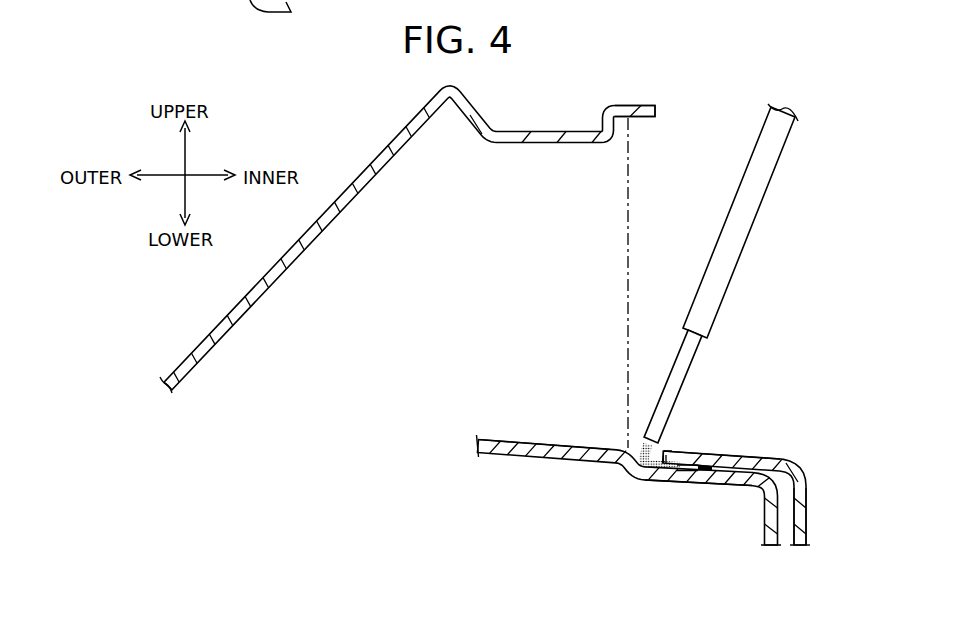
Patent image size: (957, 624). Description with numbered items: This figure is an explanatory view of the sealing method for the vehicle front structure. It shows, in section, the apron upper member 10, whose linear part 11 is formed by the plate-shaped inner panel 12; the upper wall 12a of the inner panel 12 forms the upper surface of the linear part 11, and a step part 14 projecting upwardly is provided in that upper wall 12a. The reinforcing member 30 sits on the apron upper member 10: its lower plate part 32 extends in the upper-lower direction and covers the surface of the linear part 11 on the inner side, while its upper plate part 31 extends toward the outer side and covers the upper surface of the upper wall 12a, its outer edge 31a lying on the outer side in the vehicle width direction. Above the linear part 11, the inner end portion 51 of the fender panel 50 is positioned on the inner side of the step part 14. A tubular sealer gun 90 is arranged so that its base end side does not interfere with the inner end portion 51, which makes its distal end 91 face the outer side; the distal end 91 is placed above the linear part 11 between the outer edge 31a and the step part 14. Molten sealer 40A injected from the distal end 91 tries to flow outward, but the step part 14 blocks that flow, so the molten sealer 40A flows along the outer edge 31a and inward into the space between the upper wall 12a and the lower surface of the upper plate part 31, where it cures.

The apron upper member 10 is at (516, 351).
The linear part 11 is at (667, 467).
The inner panel 12 is at (503, 439).
The upper wall 12a is at (558, 443).
The step part 14 is at (633, 455).
The reinforcing member 30 is at (807, 507).
The upper plate part 31 is at (752, 452).
The outer edge 31a is at (664, 449).
The lower plate part 32 is at (807, 535).
The molten sealer 40A is at (660, 480).
The fender panel 50 is at (368, 160).
The inner end portion 51 is at (657, 111).
The sealer gun 90 is at (743, 253).
The distal end 91 is at (677, 400).